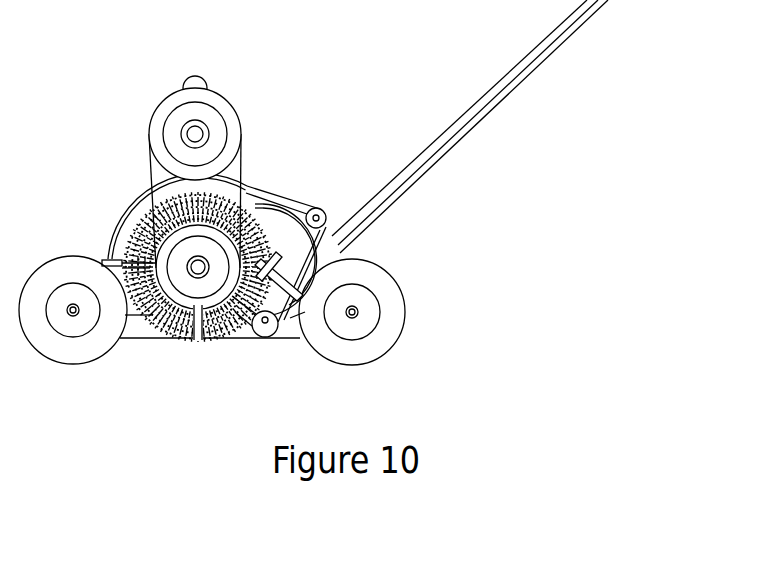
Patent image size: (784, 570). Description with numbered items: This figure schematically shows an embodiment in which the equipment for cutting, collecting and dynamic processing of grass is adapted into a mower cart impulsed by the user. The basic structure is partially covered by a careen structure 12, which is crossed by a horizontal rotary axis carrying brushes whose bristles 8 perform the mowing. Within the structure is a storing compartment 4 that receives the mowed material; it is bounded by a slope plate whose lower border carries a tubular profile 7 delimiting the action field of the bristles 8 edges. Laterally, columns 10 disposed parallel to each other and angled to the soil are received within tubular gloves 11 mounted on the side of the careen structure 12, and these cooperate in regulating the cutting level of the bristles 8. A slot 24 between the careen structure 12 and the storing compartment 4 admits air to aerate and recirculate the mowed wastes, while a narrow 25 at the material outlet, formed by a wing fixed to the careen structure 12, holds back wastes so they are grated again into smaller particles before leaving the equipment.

The storing compartment 4 is at (295, 252).
The tubular profile 7 is at (262, 332).
The bristles 8 is at (211, 339).
The columns 10 is at (277, 280).
The tubular gloves 11 is at (253, 260).
The careen structure 12 is at (135, 197).
The slot 24 is at (279, 197).
The narrow 25 is at (113, 260).